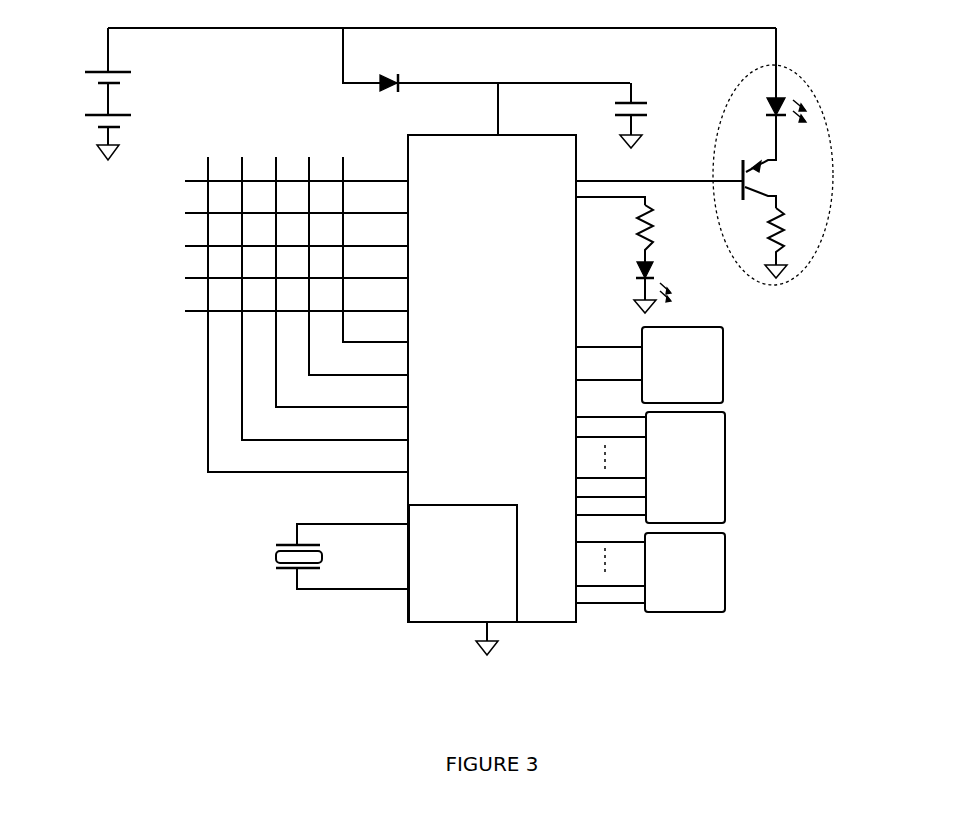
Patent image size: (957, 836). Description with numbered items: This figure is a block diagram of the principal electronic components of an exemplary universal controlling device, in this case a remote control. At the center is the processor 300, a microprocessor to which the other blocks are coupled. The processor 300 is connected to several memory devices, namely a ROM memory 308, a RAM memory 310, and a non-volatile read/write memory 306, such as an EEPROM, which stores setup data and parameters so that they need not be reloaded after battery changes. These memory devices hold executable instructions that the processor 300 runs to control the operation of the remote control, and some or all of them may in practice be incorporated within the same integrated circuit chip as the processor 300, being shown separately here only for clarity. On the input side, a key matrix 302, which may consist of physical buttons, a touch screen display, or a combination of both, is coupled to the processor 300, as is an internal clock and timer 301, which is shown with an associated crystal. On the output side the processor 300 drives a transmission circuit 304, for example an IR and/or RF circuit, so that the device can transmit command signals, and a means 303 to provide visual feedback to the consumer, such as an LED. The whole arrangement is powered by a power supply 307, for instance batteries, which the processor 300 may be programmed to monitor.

The processor 300 is at (539, 622).
The internal clock and timer 301 is at (434, 613).
The key matrix 302 is at (142, 240).
The means to provide visual feedback 303 is at (668, 258).
The transmission circuit 304 is at (833, 206).
The non-volatile read/write memory 306 is at (726, 355).
The power supply 307 is at (108, 97).
The ROM memory 308 is at (727, 467).
The RAM memory 310 is at (727, 562).